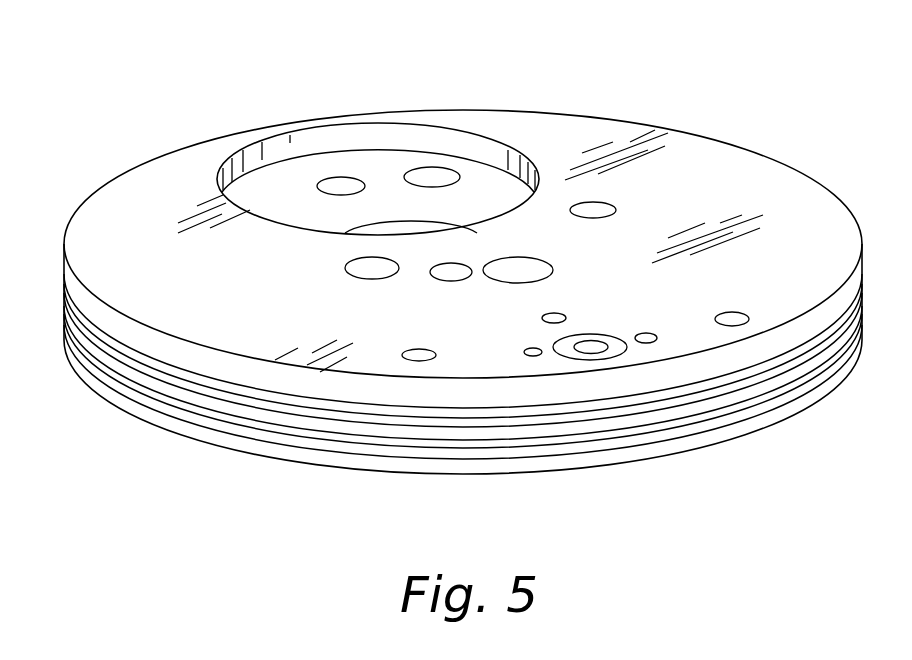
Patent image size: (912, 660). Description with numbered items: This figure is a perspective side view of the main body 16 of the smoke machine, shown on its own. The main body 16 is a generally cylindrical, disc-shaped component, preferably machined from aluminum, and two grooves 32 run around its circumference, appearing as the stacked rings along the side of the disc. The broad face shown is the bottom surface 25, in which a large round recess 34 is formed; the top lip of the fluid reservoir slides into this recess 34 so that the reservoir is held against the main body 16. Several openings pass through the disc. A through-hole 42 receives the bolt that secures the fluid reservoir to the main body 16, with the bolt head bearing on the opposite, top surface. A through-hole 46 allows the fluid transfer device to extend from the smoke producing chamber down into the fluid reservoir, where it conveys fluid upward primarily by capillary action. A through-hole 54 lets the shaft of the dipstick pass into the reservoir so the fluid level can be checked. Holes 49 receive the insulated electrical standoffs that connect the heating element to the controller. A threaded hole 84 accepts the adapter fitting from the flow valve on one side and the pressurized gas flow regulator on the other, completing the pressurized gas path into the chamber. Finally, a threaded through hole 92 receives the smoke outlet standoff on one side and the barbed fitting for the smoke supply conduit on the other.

The main body 16 is at (99, 161).
The bottom surface 25 is at (802, 184).
The grooves 32 is at (147, 393).
The round recess 34 is at (352, 137).
The through-hole 42 is at (324, 183).
The through-hole 46 is at (385, 207).
The holes 49 is at (614, 203).
The through-hole 54 is at (452, 180).
The threaded hole 84 is at (556, 270).
The threaded through hole 92 is at (462, 282).